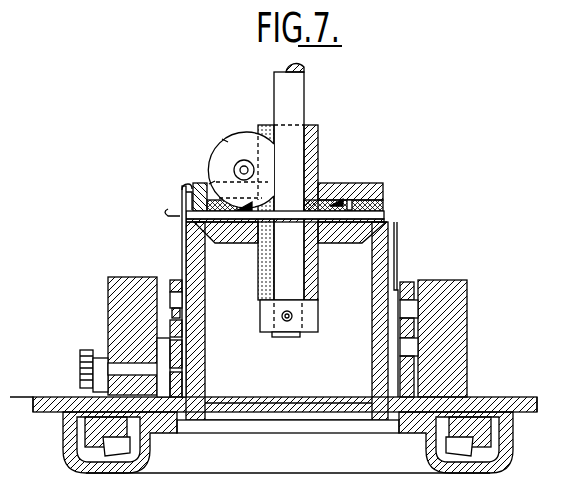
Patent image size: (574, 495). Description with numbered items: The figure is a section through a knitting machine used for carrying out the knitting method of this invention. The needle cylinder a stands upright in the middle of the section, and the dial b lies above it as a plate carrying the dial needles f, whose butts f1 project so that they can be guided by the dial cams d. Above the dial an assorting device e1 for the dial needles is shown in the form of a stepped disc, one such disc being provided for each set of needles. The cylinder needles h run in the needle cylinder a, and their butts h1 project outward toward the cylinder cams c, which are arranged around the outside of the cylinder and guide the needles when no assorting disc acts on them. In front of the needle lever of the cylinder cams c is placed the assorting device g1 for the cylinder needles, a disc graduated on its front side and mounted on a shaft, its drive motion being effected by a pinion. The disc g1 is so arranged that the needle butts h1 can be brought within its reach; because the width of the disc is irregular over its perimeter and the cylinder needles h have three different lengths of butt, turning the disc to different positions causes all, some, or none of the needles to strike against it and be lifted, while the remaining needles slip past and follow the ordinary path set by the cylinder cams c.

The needle cylinder a is at (186, 248).
The dial b is at (184, 213).
The cylinder cams c is at (170, 323).
The dial cams d is at (213, 196).
The assorting device for the dial needles e1 is at (236, 134).
The dial needles f is at (172, 213).
The butts of the dial needles f1 is at (192, 189).
The cylinder needles h is at (182, 183).
The butts of the cylinder needles h1 is at (182, 313).
The assorting device for the cylinder needles g1 is at (178, 387).